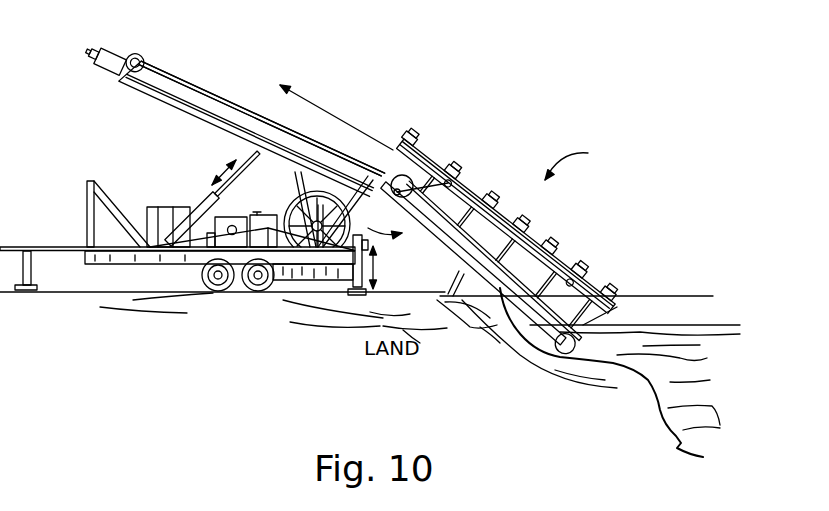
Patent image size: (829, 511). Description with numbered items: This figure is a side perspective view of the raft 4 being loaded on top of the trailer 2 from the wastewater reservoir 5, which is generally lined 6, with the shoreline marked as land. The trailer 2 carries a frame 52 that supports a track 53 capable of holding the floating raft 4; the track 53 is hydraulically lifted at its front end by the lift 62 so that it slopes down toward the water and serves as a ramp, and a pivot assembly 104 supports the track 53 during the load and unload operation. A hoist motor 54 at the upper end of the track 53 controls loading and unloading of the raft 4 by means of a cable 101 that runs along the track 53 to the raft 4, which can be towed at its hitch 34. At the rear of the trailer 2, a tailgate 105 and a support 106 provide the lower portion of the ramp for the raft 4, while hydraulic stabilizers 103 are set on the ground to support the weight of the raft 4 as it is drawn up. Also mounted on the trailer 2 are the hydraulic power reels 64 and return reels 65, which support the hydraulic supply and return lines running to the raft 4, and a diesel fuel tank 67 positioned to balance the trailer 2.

The trailer 2 is at (57, 249).
The raft 4 is at (496, 235).
The wastewater reservoir 5 is at (735, 377).
The liner 6 is at (615, 363).
The hitch 34 is at (378, 165).
The frame 52 is at (88, 190).
The track 53 is at (180, 110).
The hoist motor 54 is at (128, 62).
The lift 62 is at (200, 200).
The hydraulic power reels 64 is at (318, 205).
The return reels 65 is at (340, 212).
The diesel fuel tank 67 is at (270, 232).
The cable 101 is at (185, 78).
The hydraulic stabilizers 103 is at (353, 283).
The pivot assembly 104 is at (305, 193).
The tailgate 105 is at (444, 250).
The support 106 is at (452, 292).